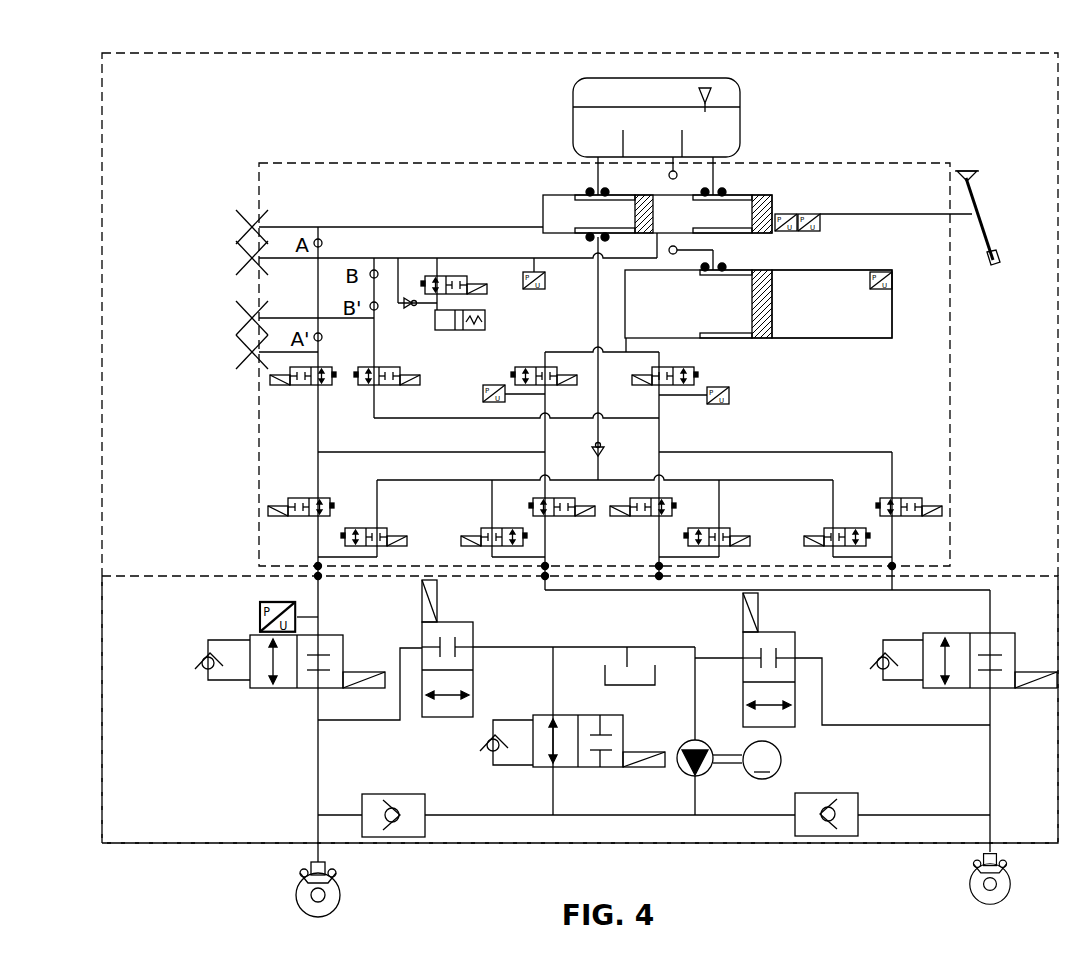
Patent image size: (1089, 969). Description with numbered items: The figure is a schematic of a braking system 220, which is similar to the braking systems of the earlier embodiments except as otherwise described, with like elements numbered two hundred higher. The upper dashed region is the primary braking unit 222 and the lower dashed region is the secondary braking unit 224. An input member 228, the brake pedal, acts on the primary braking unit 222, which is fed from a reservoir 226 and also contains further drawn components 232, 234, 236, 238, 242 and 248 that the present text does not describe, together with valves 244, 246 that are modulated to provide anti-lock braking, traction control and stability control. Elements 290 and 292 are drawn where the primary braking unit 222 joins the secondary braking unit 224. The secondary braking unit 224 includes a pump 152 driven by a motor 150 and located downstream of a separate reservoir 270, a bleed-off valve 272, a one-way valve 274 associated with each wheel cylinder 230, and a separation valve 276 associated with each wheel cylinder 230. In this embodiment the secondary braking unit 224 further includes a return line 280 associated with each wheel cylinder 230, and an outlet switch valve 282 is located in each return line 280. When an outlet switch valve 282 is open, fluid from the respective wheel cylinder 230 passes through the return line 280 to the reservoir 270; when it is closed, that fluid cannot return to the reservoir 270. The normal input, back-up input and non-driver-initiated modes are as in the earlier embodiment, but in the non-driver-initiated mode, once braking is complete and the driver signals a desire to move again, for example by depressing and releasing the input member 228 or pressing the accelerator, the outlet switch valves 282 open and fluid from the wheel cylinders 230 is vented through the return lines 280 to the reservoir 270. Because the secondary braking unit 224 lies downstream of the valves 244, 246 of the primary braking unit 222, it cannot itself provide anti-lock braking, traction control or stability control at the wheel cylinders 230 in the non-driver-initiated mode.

The braking system 220 is at (314, 40).
The primary braking unit 222 is at (455, 162).
The secondary braking unit 224 is at (100, 684).
The reservoir 226 is at (740, 100).
The input member 228 is at (991, 285).
The wheel cylinder 230 is at (337, 876).
The master brake cylinder 232 is at (543, 212).
The electrically controllable pressure supply device 234 is at (784, 325).
The piston 236 is at (737, 340).
The electric motor 238 is at (845, 340).
The simulator valve 242 is at (485, 320).
The valve 244 is at (288, 510).
The valve 246 is at (385, 530).
The isolation valve 248 is at (287, 380).
The reservoir 270 is at (636, 687).
The bleed-off valve 272 is at (595, 768).
The one-way valve 274 is at (390, 795).
The separation valve 276 is at (283, 688).
The return line 280 is at (358, 722).
The outlet switch valve 282 is at (475, 655).
The connection point 290 is at (322, 568).
The connection point 292 is at (314, 578).
The motor 150 is at (783, 763).
The pump 152 is at (713, 770).